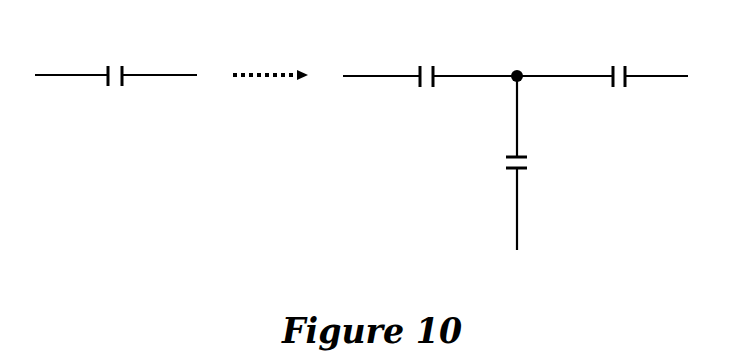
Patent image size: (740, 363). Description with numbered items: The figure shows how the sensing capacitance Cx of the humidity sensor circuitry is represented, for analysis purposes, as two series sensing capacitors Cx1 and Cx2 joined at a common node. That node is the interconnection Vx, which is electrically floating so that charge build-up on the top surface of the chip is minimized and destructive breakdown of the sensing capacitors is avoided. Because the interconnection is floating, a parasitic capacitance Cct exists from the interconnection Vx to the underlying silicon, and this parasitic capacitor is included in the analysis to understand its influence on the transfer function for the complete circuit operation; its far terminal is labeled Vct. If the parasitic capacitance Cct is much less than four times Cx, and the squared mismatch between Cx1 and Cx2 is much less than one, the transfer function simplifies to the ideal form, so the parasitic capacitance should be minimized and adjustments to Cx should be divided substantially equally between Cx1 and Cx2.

The sensing capacitor Cx is at (116, 54).
The first sensing capacitor Cx1 is at (430, 55).
The floating interconnection Vx is at (517, 52).
The second sensing capacitor Cx2 is at (602, 55).
The parasitic capacitance Cct is at (480, 163).
The control voltage Vct is at (520, 276).